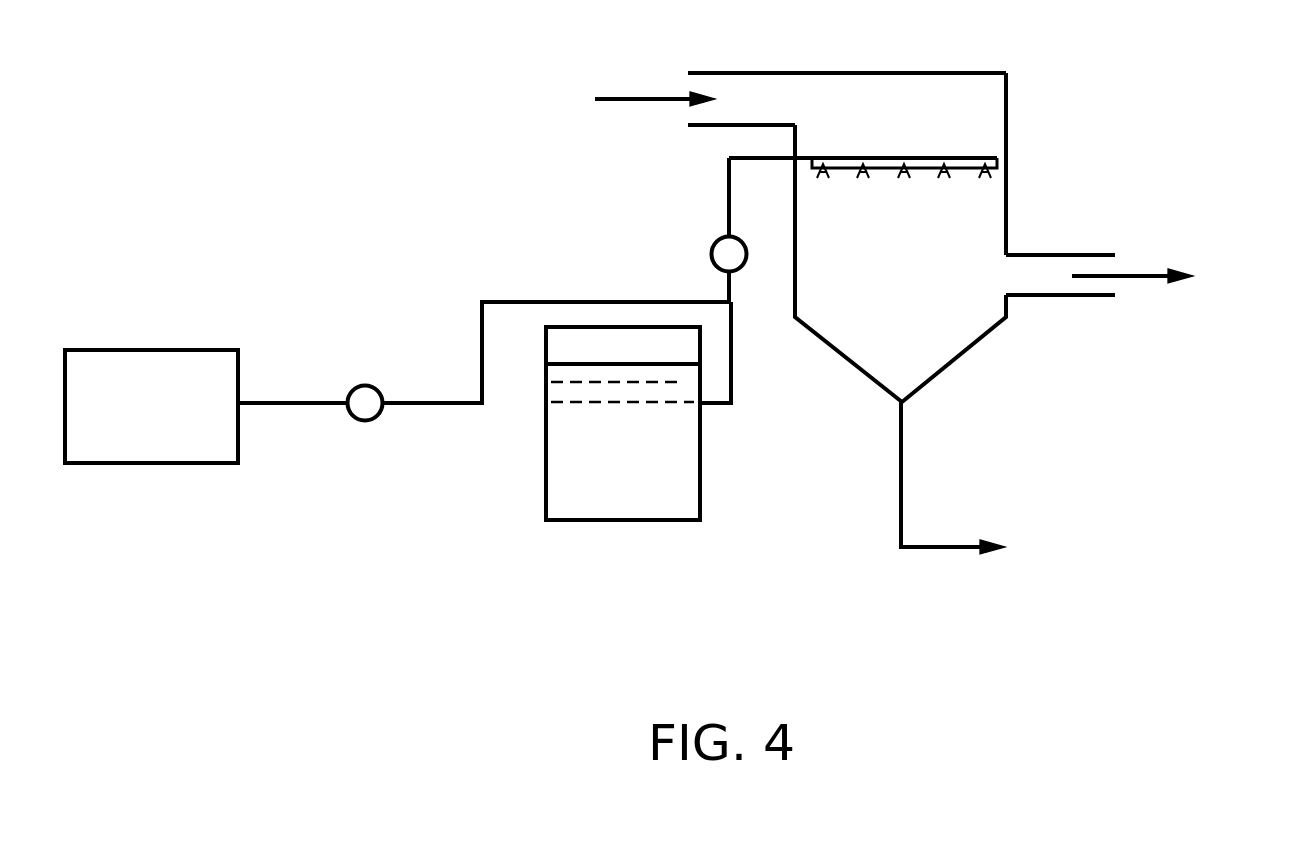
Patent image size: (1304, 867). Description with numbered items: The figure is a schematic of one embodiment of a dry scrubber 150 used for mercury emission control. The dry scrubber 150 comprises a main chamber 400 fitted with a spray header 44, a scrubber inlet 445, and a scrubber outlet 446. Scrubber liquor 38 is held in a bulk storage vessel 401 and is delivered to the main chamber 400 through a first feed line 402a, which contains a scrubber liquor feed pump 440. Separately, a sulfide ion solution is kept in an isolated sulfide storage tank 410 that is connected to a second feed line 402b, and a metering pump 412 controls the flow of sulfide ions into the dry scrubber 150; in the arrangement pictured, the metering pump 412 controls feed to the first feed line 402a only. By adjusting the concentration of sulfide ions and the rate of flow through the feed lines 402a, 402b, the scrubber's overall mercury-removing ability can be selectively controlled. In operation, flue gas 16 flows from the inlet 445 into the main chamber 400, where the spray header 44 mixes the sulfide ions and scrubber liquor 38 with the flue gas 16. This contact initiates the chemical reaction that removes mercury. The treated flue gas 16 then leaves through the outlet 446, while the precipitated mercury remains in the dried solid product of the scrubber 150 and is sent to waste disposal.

The dry scrubber 150 is at (458, 150).
The flue gas 16 is at (652, 97).
The scrubber inlet 445 is at (790, 111).
The spray header 44 is at (938, 158).
The first feed line 402a is at (729, 190).
The scrubber liquor feed pump 440 is at (711, 254).
The second feed line 402b is at (523, 300).
The main chamber 400 is at (928, 273).
The scrubber outlet 446 is at (1058, 287).
The sulfide storage tank 410 is at (175, 418).
The metering pump 412 is at (352, 418).
The scrubber liquor 38 is at (640, 435).
The bulk storage vessel 401 is at (702, 432).